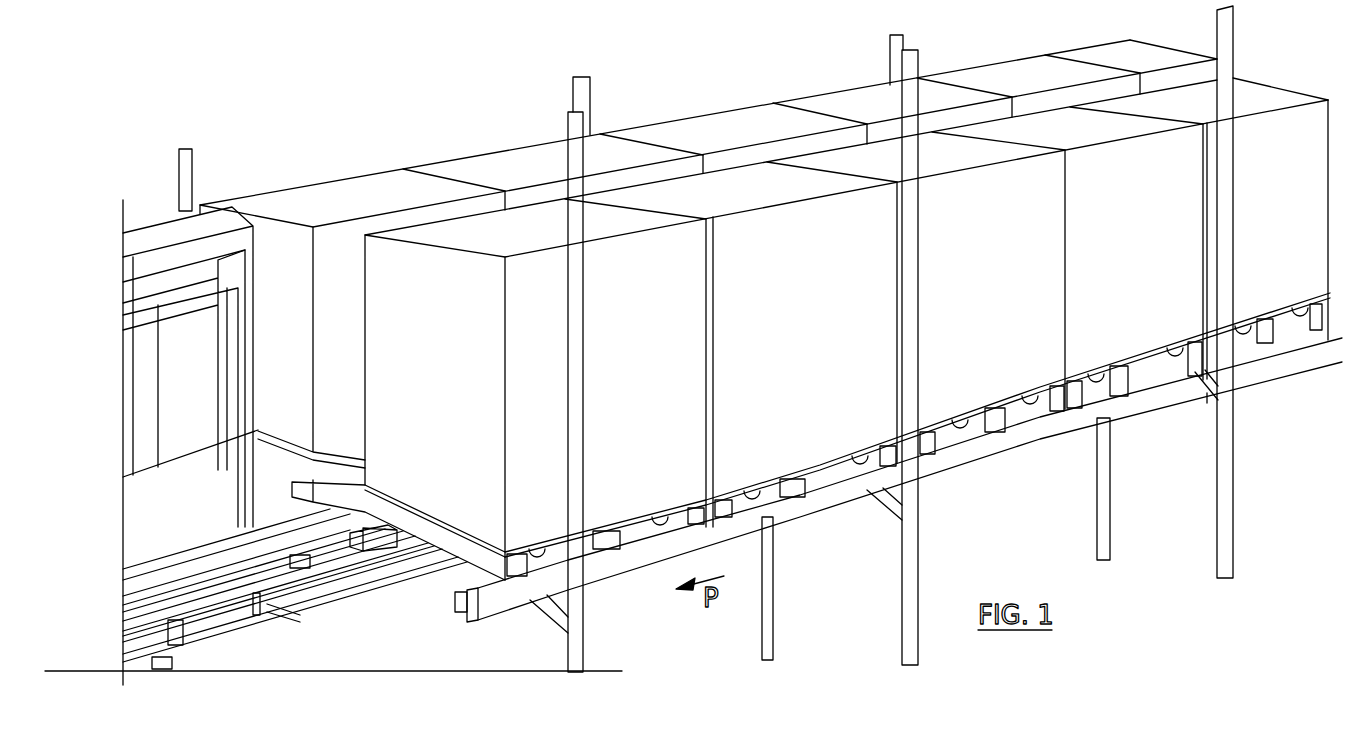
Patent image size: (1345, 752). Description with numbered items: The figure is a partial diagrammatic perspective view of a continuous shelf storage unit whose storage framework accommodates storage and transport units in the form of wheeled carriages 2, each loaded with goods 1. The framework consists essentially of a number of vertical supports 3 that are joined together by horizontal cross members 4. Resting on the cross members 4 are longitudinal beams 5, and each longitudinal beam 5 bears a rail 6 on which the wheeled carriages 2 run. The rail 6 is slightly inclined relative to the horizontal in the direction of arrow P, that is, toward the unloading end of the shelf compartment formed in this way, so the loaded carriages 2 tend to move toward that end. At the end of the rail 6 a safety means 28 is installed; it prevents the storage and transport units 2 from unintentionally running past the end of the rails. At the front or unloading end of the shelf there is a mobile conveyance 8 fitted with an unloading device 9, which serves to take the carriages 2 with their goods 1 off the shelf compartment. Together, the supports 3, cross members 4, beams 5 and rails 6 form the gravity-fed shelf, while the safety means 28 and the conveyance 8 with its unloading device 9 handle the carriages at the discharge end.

The goods 1 is at (773, 190).
The wheeled carriage 2 is at (653, 534).
The vertical support 3 is at (912, 537).
The horizontal cross member 4 is at (553, 612).
The longitudinal beam 5 is at (1040, 420).
The rail 6 is at (460, 612).
The mobile conveyance 8 is at (193, 534).
The unloading device 9 is at (433, 557).
The safety means 28 is at (355, 527).